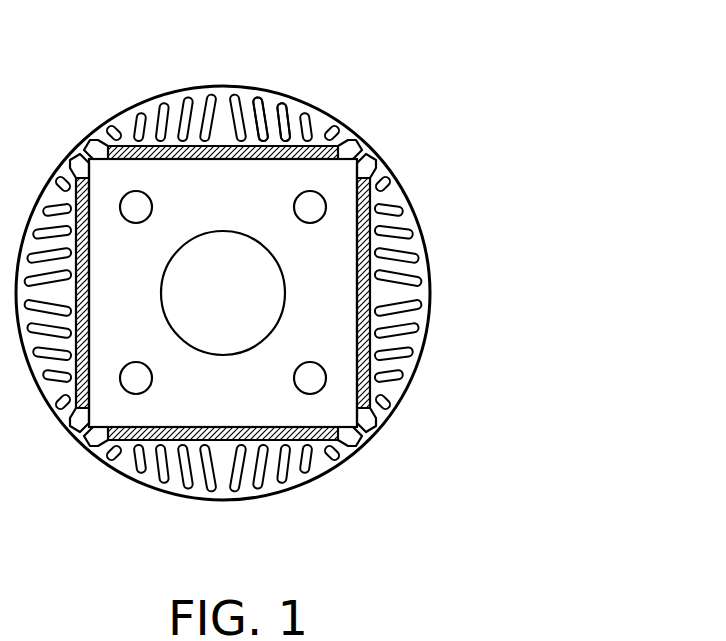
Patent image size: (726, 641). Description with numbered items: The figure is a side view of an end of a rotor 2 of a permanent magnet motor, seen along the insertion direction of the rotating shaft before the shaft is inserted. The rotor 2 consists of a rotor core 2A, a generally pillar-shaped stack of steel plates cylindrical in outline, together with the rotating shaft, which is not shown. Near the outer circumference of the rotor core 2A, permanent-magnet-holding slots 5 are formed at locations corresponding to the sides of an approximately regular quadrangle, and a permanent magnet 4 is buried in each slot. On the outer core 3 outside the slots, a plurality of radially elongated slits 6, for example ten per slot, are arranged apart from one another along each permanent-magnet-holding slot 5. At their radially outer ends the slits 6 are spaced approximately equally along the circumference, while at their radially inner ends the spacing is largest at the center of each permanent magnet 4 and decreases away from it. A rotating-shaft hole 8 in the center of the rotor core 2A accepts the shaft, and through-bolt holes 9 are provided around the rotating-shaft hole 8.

The rotor 2 is at (442, 277).
The rotor core 2A is at (419, 373).
The outer core 3 is at (250, 87).
The permanent magnet 4 is at (220, 146).
The permanent-magnet-holding slot 5 is at (88, 140).
The slit 6 is at (288, 103).
The rotating-shaft hole 8 is at (222, 340).
The through-bolt hole 9 is at (311, 207).